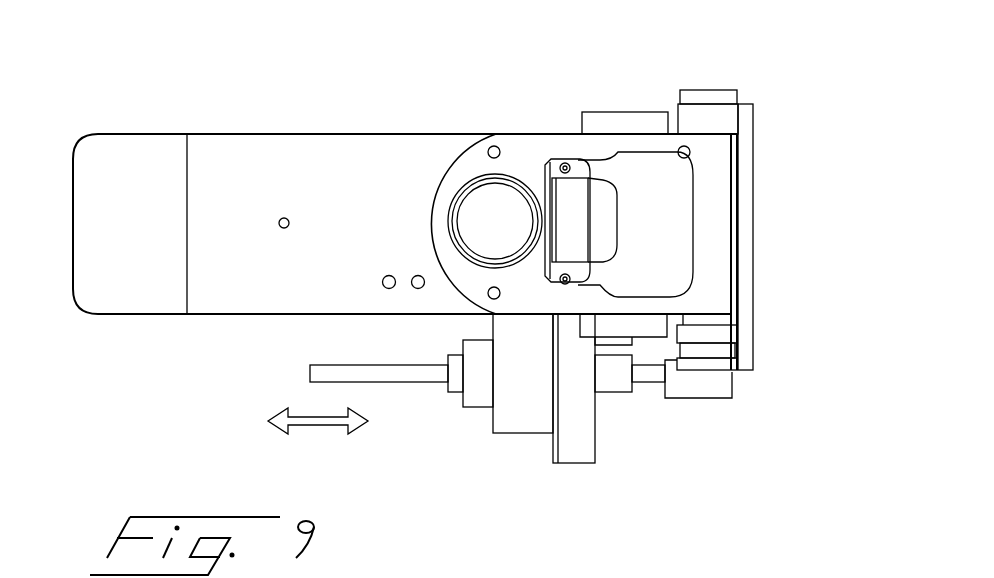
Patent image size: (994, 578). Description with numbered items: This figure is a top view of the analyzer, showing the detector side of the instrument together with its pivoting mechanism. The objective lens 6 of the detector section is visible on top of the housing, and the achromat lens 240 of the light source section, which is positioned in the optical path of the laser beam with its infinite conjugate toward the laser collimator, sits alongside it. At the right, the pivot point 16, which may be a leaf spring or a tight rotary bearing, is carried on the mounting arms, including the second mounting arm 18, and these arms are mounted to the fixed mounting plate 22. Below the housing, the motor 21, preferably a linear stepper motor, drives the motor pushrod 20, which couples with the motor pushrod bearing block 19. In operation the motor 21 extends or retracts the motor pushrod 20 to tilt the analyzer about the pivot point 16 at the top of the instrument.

The objective lens 6 is at (498, 233).
The pivot point 16 is at (711, 91).
The second mounting arm 18 is at (720, 117).
The motor pushrod bearing block 19 is at (715, 388).
The motor pushrod 20 is at (398, 372).
The motor 21 is at (520, 410).
The mounting plate 22 is at (747, 195).
The achromat lens 240 is at (576, 218).